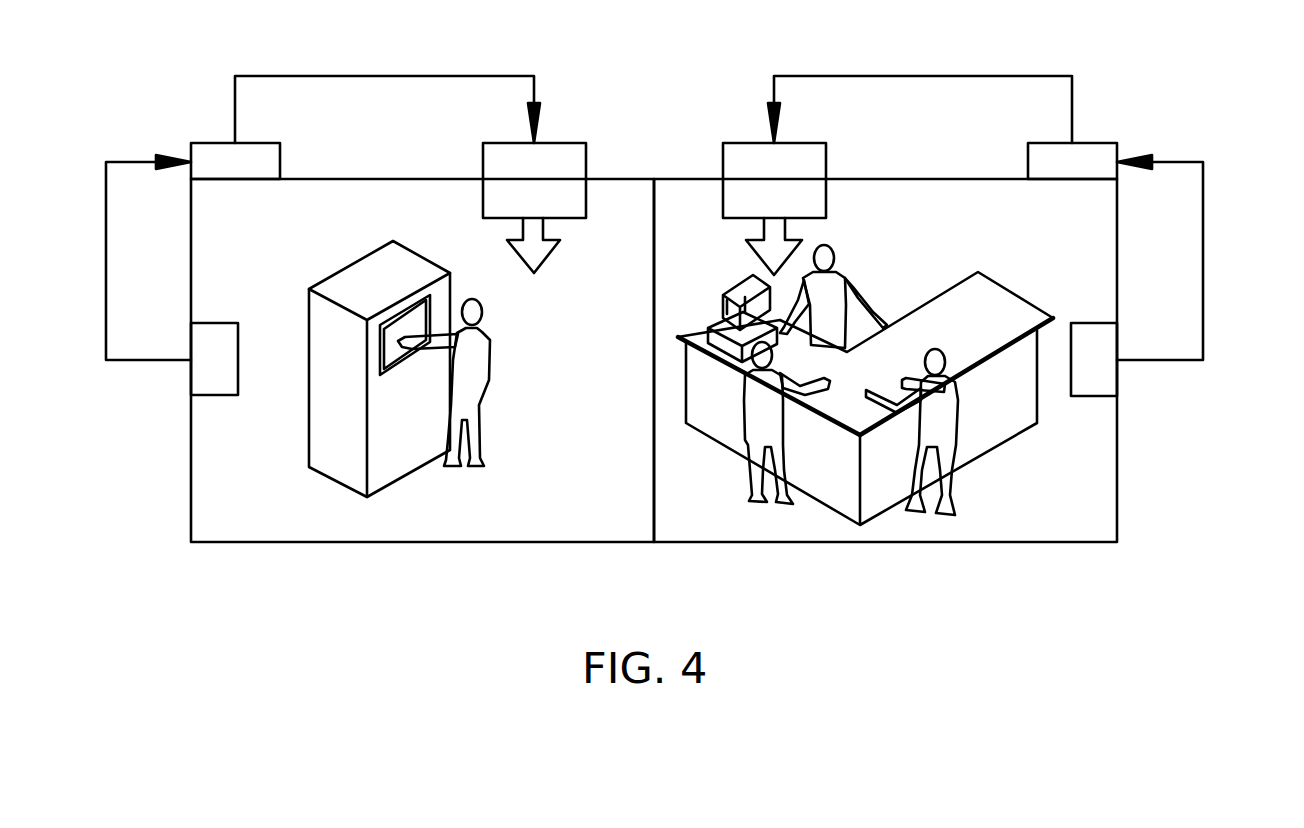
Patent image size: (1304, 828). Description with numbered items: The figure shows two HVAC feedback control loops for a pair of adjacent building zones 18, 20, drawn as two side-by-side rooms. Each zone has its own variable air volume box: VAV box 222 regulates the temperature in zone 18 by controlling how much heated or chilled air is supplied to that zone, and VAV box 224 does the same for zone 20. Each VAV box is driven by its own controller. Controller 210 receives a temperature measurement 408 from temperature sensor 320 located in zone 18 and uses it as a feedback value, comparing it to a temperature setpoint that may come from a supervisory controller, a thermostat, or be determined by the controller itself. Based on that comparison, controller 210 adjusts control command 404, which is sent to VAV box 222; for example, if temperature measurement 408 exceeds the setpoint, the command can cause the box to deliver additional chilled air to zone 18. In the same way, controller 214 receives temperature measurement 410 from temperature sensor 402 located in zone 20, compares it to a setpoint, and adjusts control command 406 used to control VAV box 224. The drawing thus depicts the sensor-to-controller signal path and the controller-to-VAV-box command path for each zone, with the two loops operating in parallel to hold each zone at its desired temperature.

The building zone 18 is at (527, 542).
The building zone 20 is at (1025, 542).
The controller 210 is at (201, 152).
The controller 214 is at (1105, 155).
The VAV box 222 is at (585, 207).
The VAV box 224 is at (824, 203).
The temperature sensor 320 is at (193, 388).
The temperature sensor 402 is at (1107, 385).
The control command 404 is at (402, 76).
The control command 406 is at (908, 76).
The temperature measurement 408 is at (106, 268).
The temperature measurement 410 is at (1203, 232).